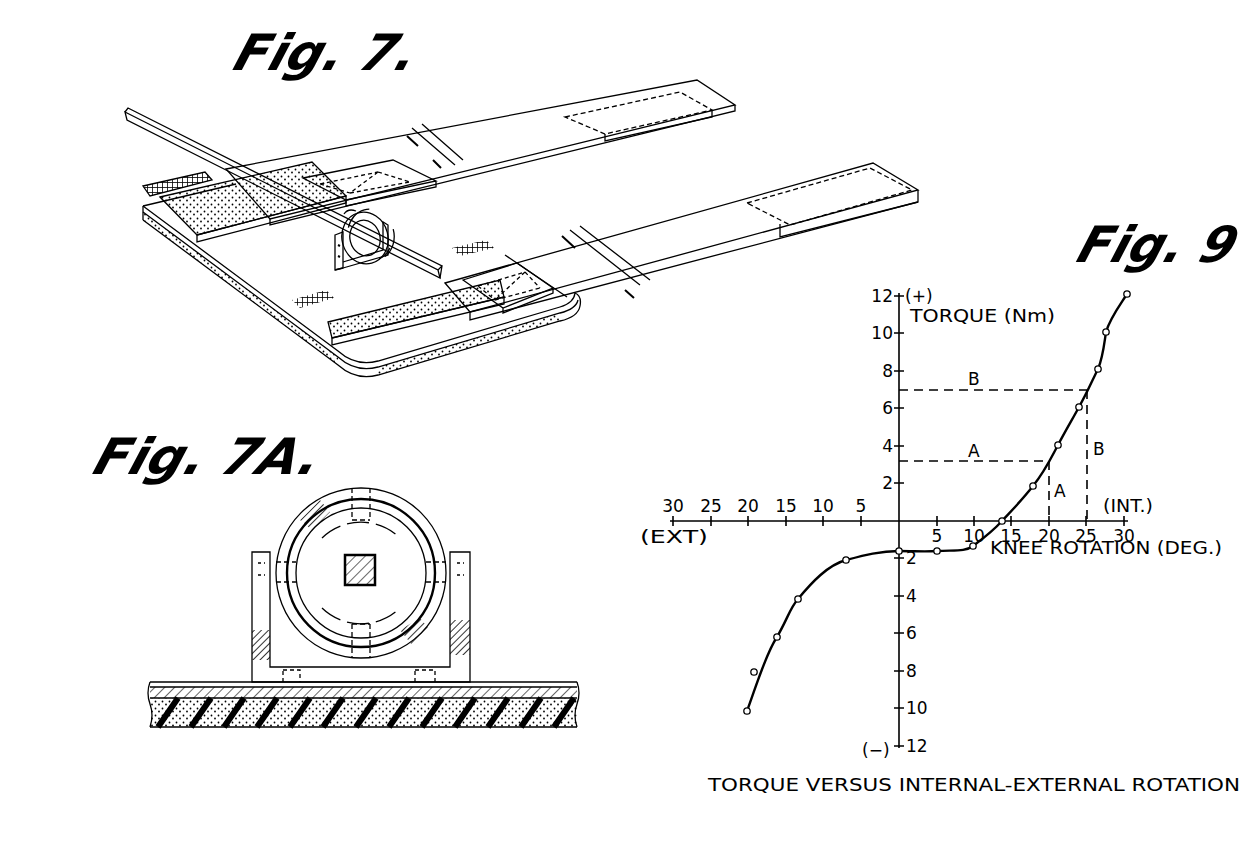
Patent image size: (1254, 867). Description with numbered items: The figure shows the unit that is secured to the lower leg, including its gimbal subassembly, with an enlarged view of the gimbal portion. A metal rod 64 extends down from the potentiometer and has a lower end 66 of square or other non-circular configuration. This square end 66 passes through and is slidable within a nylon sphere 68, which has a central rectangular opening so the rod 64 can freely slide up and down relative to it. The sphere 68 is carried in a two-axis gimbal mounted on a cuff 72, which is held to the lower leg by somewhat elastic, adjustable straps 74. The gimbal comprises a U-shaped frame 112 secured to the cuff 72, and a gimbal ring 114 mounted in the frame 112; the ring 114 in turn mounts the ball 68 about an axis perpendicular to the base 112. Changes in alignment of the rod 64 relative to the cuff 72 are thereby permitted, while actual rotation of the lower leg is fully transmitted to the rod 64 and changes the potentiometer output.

In FIG. 7, the metal rod 64 is at (176, 133).
In FIG. 7, the lower end 66 is at (307, 218).
In FIG. 7A, the lower end 66 is at (370, 555).
In FIG. 7, the nylon sphere 68 is at (365, 252).
In FIG. 7A, the nylon sphere 68 is at (318, 588).
In FIG. 7, the cuff 72 is at (265, 280).
In FIG. 7A, the cuff 72 is at (592, 688).
In FIG. 7, the straps 74 is at (520, 132).
In FIG. 7, the U-shaped frame 112 is at (298, 308).
In FIG. 7A, the U-shaped frame 112 is at (468, 618).
In FIG. 7, the gimbal ring 114 is at (362, 214).
In FIG. 7A, the gimbal ring 114 is at (432, 538).